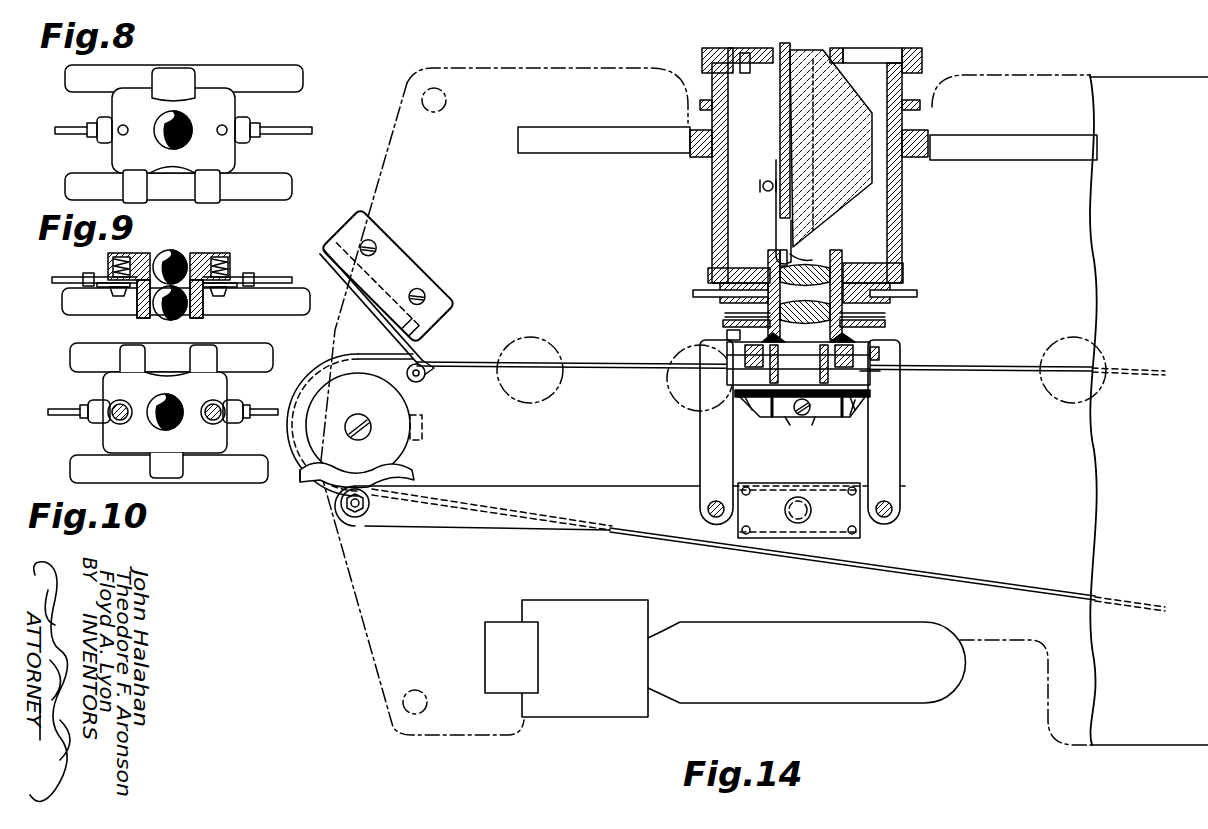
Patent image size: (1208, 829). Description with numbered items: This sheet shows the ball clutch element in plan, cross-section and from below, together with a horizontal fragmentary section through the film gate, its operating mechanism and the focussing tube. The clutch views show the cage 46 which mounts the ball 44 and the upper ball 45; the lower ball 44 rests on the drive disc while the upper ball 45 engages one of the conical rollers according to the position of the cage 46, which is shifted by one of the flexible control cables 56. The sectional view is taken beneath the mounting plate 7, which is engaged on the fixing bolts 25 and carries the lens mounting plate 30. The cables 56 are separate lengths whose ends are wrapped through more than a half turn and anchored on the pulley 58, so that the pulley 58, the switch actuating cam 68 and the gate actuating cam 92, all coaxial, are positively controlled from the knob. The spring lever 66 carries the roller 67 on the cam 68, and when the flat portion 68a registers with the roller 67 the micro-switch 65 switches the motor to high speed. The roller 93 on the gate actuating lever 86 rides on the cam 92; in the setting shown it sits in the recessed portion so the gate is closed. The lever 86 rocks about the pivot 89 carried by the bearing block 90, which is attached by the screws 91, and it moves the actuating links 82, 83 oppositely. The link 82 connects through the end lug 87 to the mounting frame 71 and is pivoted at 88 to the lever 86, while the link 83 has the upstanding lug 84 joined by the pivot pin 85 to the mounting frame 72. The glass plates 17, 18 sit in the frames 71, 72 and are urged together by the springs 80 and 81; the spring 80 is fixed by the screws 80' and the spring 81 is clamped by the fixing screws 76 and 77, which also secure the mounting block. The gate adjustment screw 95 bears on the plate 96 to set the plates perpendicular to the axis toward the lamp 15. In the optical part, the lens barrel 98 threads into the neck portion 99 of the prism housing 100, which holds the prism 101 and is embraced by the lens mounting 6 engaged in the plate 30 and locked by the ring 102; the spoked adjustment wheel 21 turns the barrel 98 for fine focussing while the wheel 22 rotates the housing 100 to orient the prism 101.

In FIG. 14, the lens mounting 6 is at (902, 208).
In FIG. 14, the mounting plate 7 is at (345, 604).
In FIG. 14, the lamp 15 is at (915, 706).
In FIG. 14, the glass plate 17 is at (752, 410).
In FIG. 14, the glass plate 18 is at (868, 330).
In FIG. 14, the spoked adjustment wheel 21 is at (745, 312).
In FIG. 14, the spoked adjustment wheel 22 is at (900, 288).
In FIG. 14, the fixing bolts 25 is at (425, 92).
In FIG. 14, the lens mounting plate 30 is at (917, 160).
In FIG. 9, the ball 44 is at (185, 312).
In FIG. 10, the ball 44 is at (170, 404).
In FIG. 8, the upper ball 45 is at (160, 122).
In FIG. 9, the upper ball 45 is at (160, 258).
In FIG. 8, the cage 46 is at (228, 115).
In FIG. 9, the cage 46 is at (203, 262).
In FIG. 10, the cage 46 is at (103, 383).
In FIG. 14, the flexible control cables 56 is at (1008, 370).
In FIG. 14, the pulley 58 is at (425, 438).
In FIG. 14, the micro-switch 65 is at (418, 268).
In FIG. 14, the spring lever 66 is at (412, 352).
In FIG. 14, the roller 67 is at (424, 378).
In FIG. 14, the switch actuating cam 68 is at (416, 466).
In FIG. 14, the flat portion 68a is at (308, 477).
In FIG. 14, the mounting frame 71 is at (870, 392).
In FIG. 14, the mounting frame 72 is at (727, 350).
In FIG. 14, the fixing screw 76 is at (780, 414).
In FIG. 14, the fixing screw 77 is at (855, 412).
In FIG. 14, the spring 80 is at (872, 409).
In FIG. 14, the screws 80' is at (812, 419).
In FIG. 14, the spring 81 is at (730, 326).
In FIG. 14, the actuating link 82 is at (700, 441).
In FIG. 14, the actuating link 83 is at (900, 443).
In FIG. 14, the upstanding lug 84 is at (870, 372).
In FIG. 14, the pivot pin 85 is at (880, 352).
In FIG. 14, the gate actuating lever 86 is at (465, 527).
In FIG. 14, the end lug 87 is at (727, 336).
In FIG. 14, the pivot 88 is at (708, 506).
In FIG. 14, the pivot 89 is at (811, 506).
In FIG. 14, the bearing block 90 is at (822, 484).
In FIG. 14, the screws 91 is at (744, 488).
In FIG. 14, the gate actuating cam 92 is at (300, 398).
In FIG. 14, the roller 93 is at (358, 532).
In FIG. 14, the gate adjustment screw 95 is at (812, 425).
In FIG. 14, the plate 96 is at (790, 425).
In FIG. 14, the lens barrel 98 is at (826, 252).
In FIG. 14, the neck portion 99 is at (842, 312).
In FIG. 14, the prism housing 100 is at (890, 210).
In FIG. 14, the prism 101 is at (782, 155).
In FIG. 14, the ring 102 is at (922, 128).